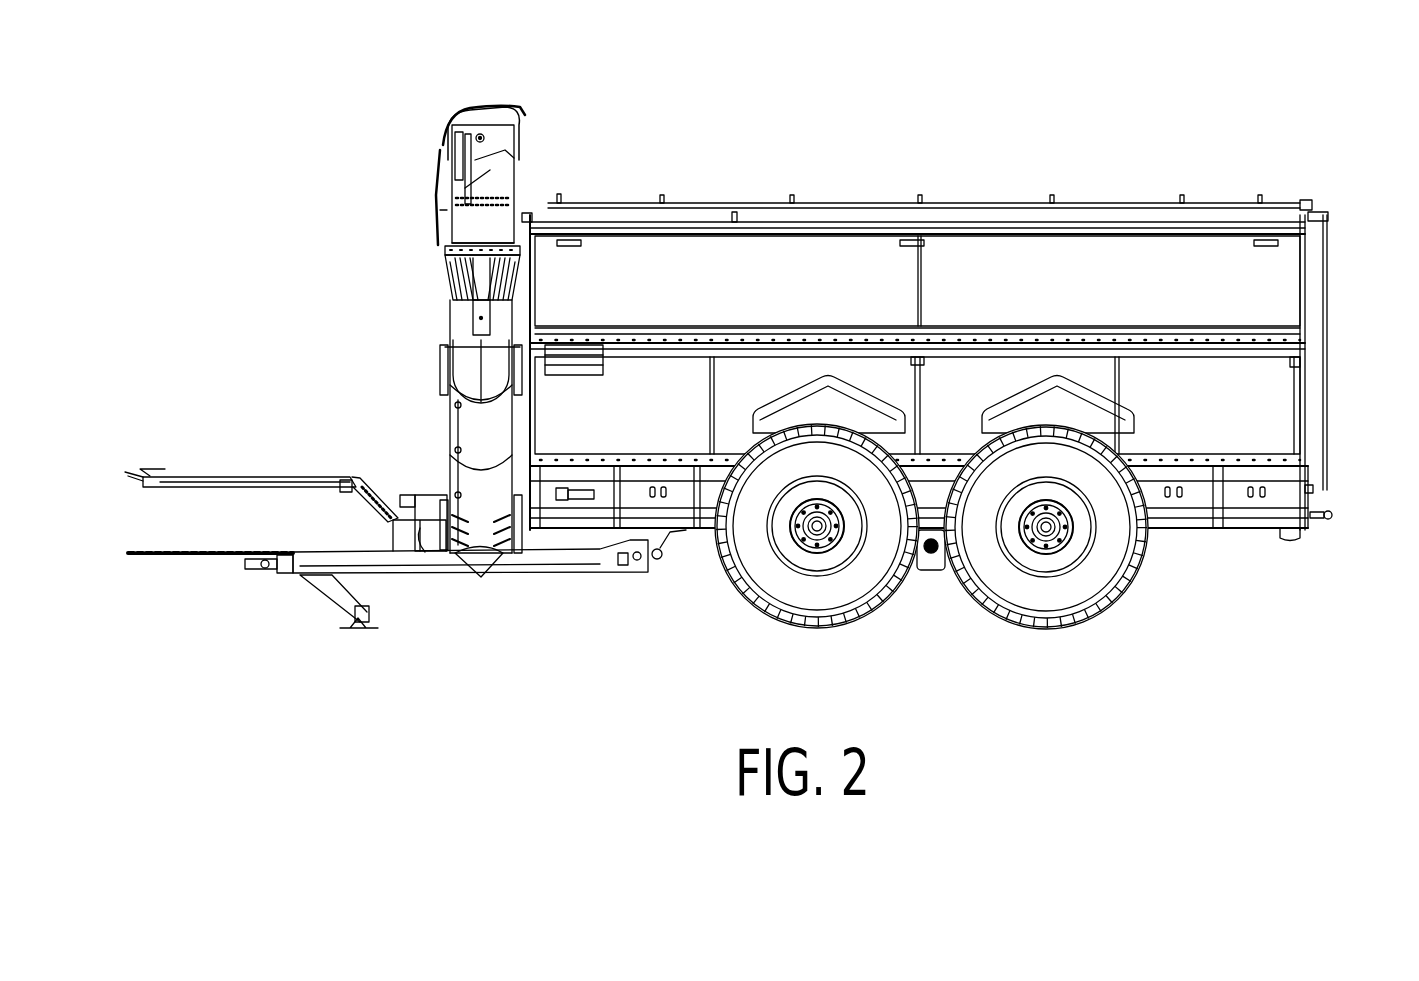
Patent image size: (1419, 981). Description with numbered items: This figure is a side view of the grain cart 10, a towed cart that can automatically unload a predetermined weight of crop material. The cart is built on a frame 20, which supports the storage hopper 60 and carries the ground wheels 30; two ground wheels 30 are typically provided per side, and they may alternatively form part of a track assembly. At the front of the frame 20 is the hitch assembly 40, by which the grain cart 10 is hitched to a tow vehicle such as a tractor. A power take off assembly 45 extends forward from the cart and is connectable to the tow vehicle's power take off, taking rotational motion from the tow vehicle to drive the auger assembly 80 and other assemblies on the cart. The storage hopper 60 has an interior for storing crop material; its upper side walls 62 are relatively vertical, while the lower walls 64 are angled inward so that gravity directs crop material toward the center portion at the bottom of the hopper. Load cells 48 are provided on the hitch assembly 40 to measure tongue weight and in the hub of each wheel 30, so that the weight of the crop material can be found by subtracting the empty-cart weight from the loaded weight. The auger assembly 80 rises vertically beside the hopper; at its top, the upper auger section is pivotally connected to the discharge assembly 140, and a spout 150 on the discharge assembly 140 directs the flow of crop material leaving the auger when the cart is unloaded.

The grain cart 10 is at (1127, 130).
The frame 20 is at (1203, 522).
The ground wheels 30 is at (782, 597).
The hitch assembly 40 is at (383, 560).
The power take off (PTO) assembly 45 is at (255, 475).
The load cells 48 is at (828, 542).
The storage hopper 60 is at (1228, 262).
The upper side walls 62 is at (1178, 300).
The lower walls 64 is at (1215, 418).
The auger assembly 80 is at (384, 259).
The discharge assembly 140 is at (500, 142).
The spout 150 is at (447, 272).